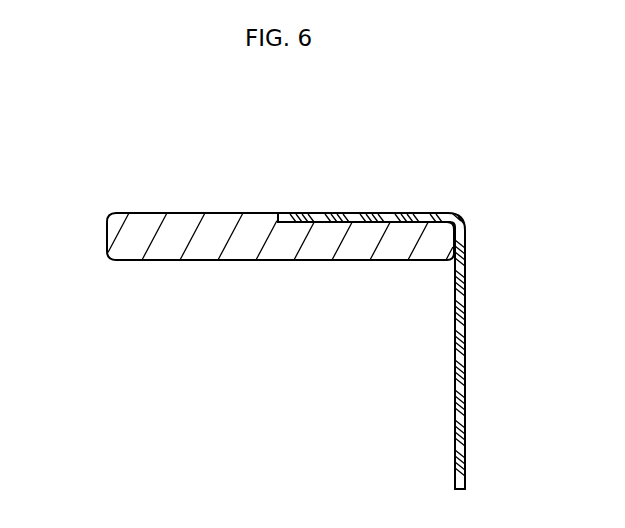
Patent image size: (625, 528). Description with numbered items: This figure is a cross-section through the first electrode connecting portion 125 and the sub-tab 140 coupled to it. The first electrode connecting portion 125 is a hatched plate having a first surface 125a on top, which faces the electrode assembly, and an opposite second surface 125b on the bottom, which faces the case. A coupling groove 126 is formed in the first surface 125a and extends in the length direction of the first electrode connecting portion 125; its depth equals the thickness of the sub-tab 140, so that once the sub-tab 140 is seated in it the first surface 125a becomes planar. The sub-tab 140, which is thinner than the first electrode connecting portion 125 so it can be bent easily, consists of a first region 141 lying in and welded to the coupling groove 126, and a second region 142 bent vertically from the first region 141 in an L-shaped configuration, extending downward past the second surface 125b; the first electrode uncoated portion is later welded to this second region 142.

The first electrode connecting portion 125 is at (110, 237).
The first surface 125a is at (215, 212).
The second surface 125b is at (215, 261).
The coupling groove 126 is at (303, 222).
The sub-tab 140 is at (404, 298).
The first region 141 is at (402, 217).
The second region 142 is at (462, 283).